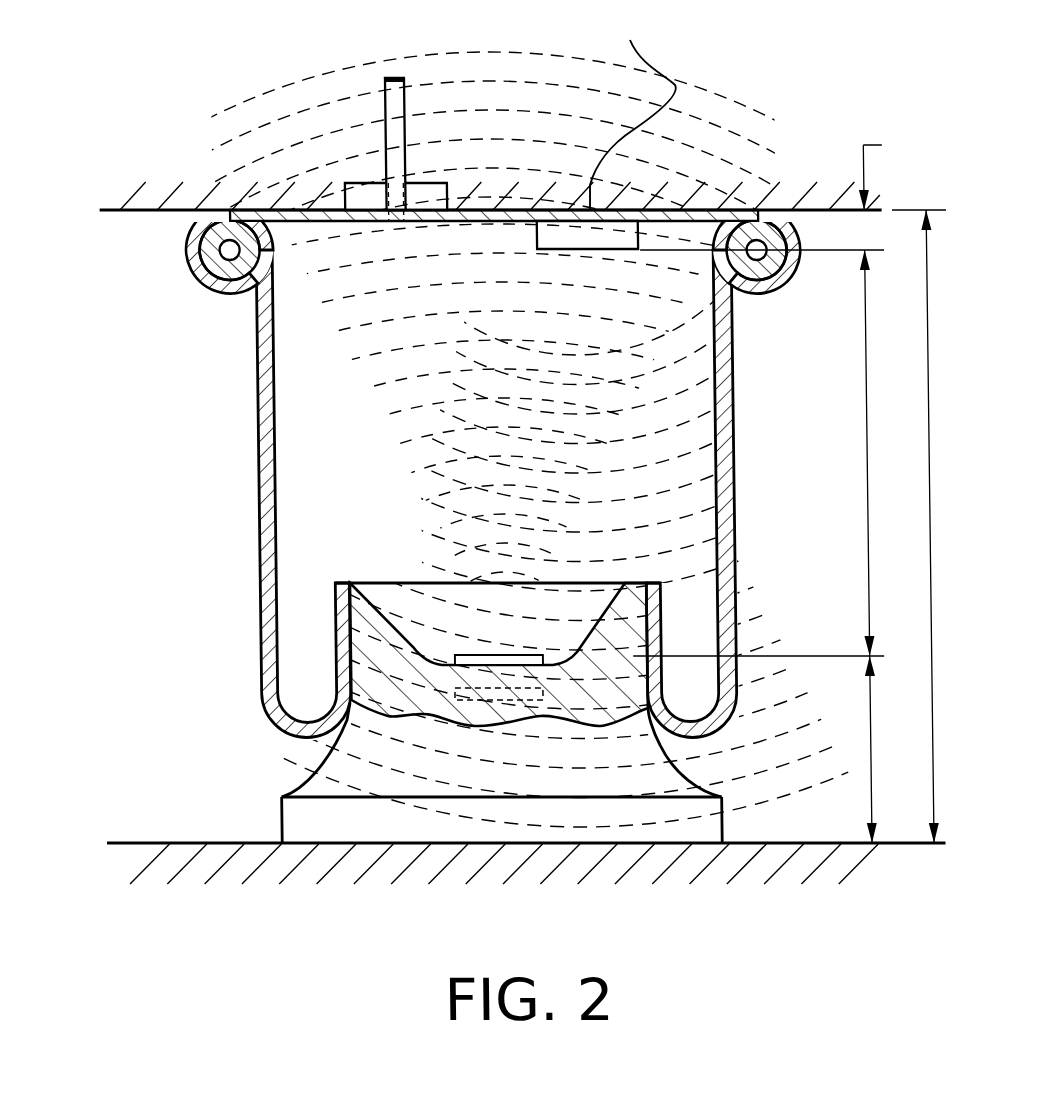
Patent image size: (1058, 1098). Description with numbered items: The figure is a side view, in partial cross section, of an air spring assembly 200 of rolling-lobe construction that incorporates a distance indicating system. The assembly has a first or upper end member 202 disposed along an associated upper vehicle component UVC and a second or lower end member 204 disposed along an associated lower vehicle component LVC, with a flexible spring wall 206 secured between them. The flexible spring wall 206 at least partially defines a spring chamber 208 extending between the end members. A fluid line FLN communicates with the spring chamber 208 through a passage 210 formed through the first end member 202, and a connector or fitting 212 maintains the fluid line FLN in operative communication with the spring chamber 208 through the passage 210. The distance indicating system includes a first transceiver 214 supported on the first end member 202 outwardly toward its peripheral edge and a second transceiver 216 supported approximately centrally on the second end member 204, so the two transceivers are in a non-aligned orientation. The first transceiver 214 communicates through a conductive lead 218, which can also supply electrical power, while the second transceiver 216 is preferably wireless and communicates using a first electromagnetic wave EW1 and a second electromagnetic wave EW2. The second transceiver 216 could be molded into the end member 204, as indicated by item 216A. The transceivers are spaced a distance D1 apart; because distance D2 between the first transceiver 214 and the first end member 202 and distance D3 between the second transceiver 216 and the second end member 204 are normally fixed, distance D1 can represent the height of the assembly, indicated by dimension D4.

The air spring assembly 200 is at (131, 428).
The first or upper end member 202 is at (742, 210).
The second or lower end member 204 is at (298, 782).
The flexible spring wall 206 is at (260, 574).
The spring chamber 208 is at (464, 472).
The passage 210 is at (402, 222).
The connector or fitting 212 is at (370, 190).
The first transceiver 214 is at (594, 240).
The second transceiver 216 is at (410, 592).
The molded-in second transceiver 216A is at (510, 680).
The conductive lead 218 is at (633, 111).
The fluid line FLN is at (389, 83).
The upper vehicle component UVC is at (149, 212).
The lower vehicle component LVC is at (176, 843).
The first electromagnetic wave EW1 is at (693, 488).
The second electromagnetic wave EW2 is at (406, 477).
The distance between transceivers D1 is at (760, 453).
The distance between first transceiver and first end member D2 is at (890, 171).
The distance between second transceiver and second end member D3 is at (874, 749).
The height of air spring assembly D4 is at (923, 526).